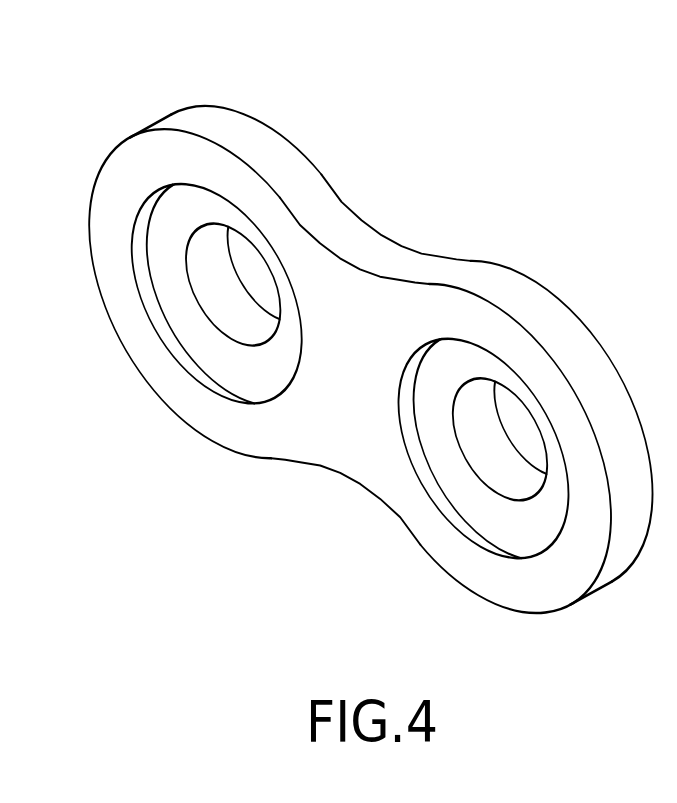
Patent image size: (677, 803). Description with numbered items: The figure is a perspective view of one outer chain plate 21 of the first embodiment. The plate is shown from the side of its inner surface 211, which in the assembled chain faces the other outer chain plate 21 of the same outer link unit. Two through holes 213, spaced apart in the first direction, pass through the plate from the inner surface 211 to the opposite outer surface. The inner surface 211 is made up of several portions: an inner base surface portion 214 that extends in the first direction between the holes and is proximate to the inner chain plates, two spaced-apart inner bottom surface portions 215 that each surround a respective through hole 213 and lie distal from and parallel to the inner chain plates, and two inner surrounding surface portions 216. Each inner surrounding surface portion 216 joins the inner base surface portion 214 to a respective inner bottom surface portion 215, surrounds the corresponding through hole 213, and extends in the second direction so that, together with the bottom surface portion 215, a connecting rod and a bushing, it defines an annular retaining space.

The outer chain plate 21 is at (357, 366).
The inner surface 211 is at (272, 472).
The through hole 213 is at (250, 257).
The inner base surface portion 214 is at (348, 442).
The inner bottom surface portion 215 is at (189, 320).
The inner surrounding surface portion 216 is at (241, 394).